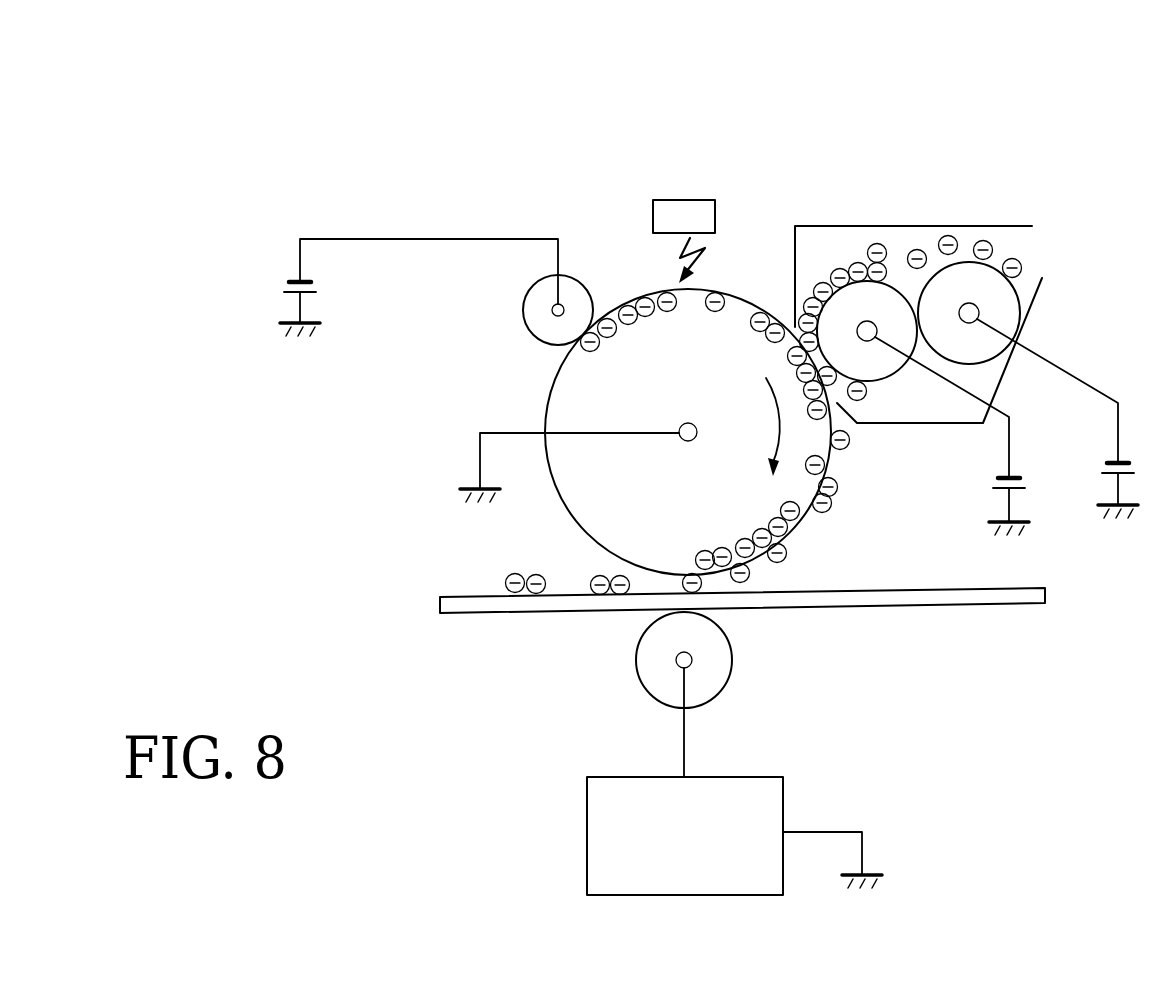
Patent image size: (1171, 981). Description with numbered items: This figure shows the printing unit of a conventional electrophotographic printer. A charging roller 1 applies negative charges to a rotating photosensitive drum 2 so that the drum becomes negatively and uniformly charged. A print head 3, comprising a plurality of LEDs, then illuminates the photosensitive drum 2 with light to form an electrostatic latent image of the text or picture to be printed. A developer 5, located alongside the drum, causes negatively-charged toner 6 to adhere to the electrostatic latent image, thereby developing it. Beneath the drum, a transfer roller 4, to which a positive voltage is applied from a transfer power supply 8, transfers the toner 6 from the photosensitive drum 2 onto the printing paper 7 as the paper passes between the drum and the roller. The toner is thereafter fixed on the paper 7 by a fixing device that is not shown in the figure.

The charging roller 1 is at (538, 326).
The photosensitive drum 2 is at (587, 508).
The print head 3 is at (680, 198).
The transfer roller 4 is at (735, 663).
The developer 5 is at (885, 225).
The toner 6 is at (837, 487).
The printing paper 7 is at (930, 606).
The transfer power supply 8 is at (587, 815).